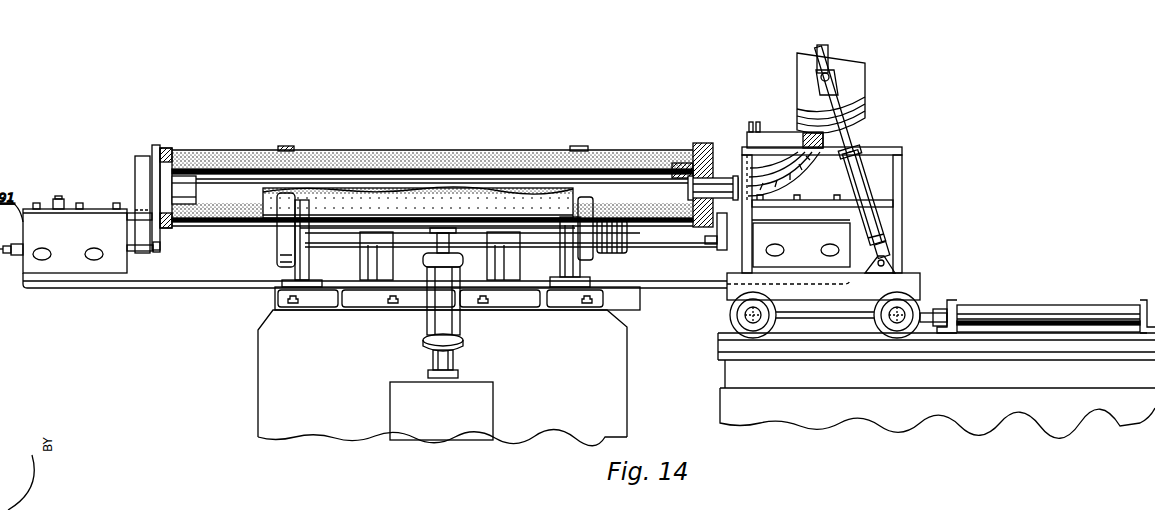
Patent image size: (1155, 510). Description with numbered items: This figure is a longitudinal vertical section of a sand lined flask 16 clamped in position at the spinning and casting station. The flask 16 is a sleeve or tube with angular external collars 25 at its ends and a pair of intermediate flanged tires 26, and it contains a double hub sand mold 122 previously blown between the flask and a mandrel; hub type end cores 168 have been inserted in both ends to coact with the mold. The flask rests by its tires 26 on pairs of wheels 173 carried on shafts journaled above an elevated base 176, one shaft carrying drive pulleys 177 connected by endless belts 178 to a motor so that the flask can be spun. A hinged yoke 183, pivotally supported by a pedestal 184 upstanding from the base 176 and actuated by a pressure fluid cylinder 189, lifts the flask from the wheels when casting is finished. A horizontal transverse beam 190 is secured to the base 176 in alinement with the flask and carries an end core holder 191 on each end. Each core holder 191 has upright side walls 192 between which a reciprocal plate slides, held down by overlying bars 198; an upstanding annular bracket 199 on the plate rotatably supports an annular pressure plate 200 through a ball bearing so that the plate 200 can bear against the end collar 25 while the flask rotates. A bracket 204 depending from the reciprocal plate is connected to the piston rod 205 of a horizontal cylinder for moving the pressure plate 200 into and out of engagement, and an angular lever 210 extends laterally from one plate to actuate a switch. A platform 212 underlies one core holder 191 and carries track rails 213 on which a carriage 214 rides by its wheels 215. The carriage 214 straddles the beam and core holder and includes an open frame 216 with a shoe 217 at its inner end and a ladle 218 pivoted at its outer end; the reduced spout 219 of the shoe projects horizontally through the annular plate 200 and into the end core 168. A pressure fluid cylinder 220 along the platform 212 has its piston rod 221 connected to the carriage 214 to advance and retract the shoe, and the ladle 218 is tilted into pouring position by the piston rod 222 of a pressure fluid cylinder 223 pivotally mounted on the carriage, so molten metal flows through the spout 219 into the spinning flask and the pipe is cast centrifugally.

The flask 16 is at (362, 152).
The external collar 25 is at (166, 150).
The flanged tire 26 is at (289, 142).
The double hub sand mold 122 is at (464, 160).
The end core 168 is at (188, 200).
The wheel 173 is at (277, 262).
The elevated base 176 is at (258, 384).
The drive pulley 177 is at (627, 237).
The endless belt 178 is at (596, 258).
The hinged yoke 183 is at (476, 228).
The pedestal 184 is at (368, 246).
The pressure fluid cylinder 189 is at (426, 333).
The horizontal transverse beam 190 is at (148, 283).
The end core holder 191 is at (758, 256).
The upright side wall 192 is at (61, 268).
The overlying bar 198 is at (96, 209).
The annular bracket 199 is at (135, 165).
The annular pressure plate 200 is at (153, 149).
The bracket 204 is at (20, 256).
The piston rod 205 is at (138, 243).
The angular lever 210 is at (58, 198).
The platform 212 is at (720, 399).
The track rail 213 is at (718, 336).
The carriage 214 is at (918, 273).
The wheel 215 is at (924, 306).
The open frame 216 is at (902, 208).
The shoe 217 is at (770, 132).
The ladle 218 is at (866, 82).
The spout 219 is at (745, 188).
The pressure fluid cylinder 220 is at (1044, 303).
The piston rod 221 is at (817, 323).
The piston rod 222 is at (850, 138).
The pressure fluid cylinder 223 is at (872, 183).